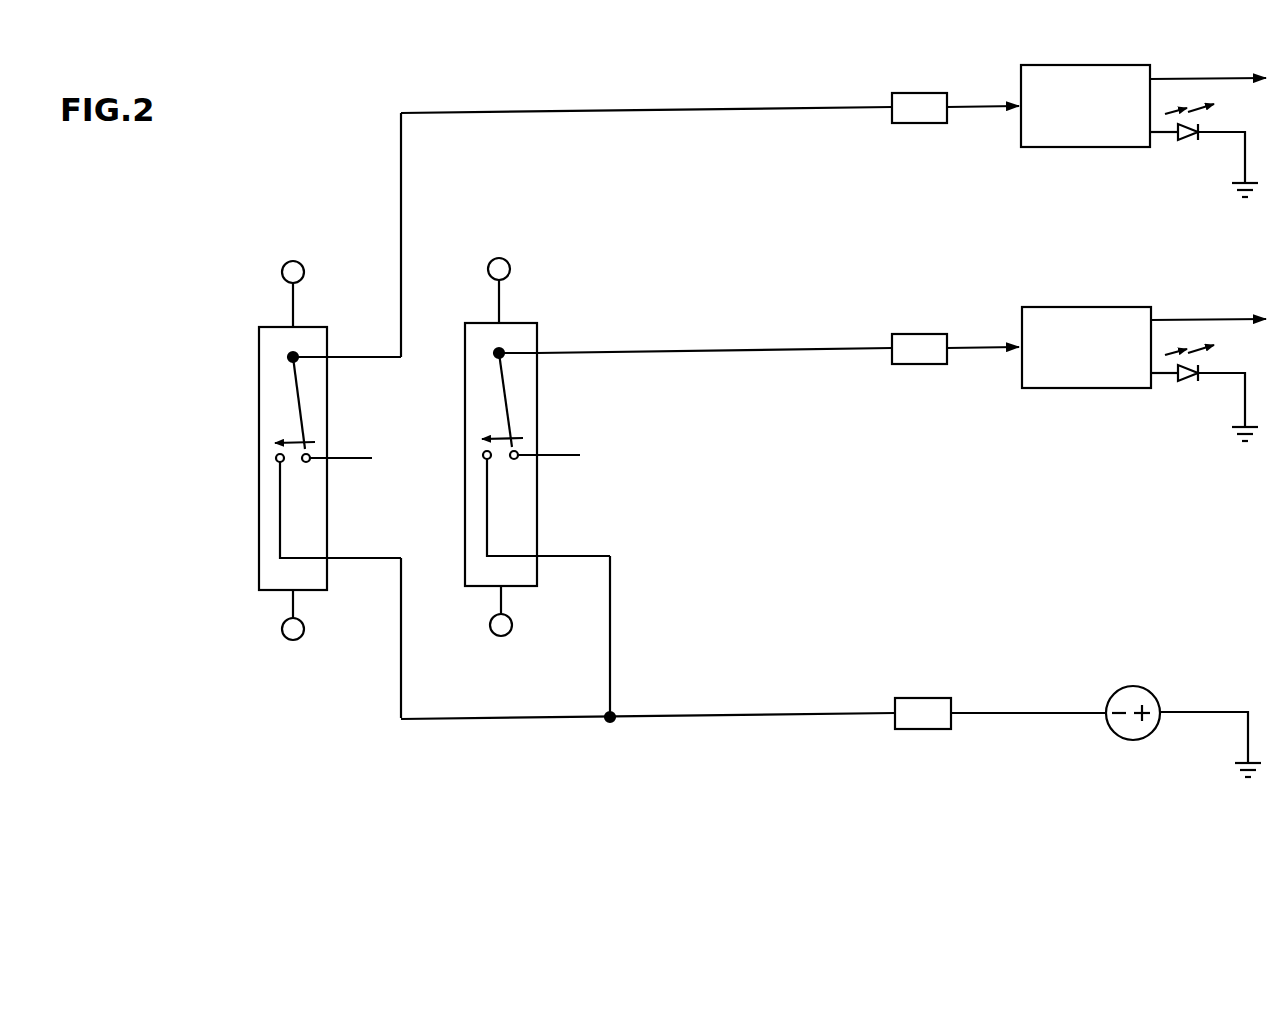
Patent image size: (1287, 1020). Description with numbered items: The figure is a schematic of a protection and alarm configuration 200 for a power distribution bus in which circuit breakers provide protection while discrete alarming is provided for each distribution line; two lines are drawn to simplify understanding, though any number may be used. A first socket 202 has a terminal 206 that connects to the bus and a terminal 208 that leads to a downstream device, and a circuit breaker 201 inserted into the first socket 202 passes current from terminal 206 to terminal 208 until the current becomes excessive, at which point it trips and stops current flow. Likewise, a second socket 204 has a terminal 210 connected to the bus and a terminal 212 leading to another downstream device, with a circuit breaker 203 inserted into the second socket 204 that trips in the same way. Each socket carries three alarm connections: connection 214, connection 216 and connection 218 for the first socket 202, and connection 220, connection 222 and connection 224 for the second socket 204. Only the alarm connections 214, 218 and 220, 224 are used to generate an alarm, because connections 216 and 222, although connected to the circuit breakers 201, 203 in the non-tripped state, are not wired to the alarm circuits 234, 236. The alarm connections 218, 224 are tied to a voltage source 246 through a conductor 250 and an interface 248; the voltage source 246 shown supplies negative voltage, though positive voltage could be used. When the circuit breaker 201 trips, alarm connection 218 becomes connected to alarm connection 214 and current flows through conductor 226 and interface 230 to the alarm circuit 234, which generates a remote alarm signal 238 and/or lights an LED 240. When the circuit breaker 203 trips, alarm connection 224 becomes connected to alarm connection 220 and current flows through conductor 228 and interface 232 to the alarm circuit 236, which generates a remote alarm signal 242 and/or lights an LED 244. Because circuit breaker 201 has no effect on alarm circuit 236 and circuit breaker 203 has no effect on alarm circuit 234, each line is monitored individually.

The protection and alarm configuration 200 is at (803, 752).
The circuit breaker 201 is at (282, 382).
The first socket 202 is at (258, 517).
The circuit breaker 203 is at (492, 372).
The second socket 204 is at (468, 514).
The terminal 206 is at (295, 261).
The terminal 208 is at (304, 634).
The terminal 210 is at (510, 265).
The terminal 212 is at (511, 630).
The alarm connection 214 is at (340, 352).
The alarm connection 216 is at (350, 456).
The alarm connection 218 is at (350, 557).
The alarm connection 220 is at (548, 350).
The alarm connection 222 is at (560, 454).
The alarm connection 224 is at (557, 555).
The conductor 226 is at (672, 110).
The conductor 228 is at (675, 351).
The interface 230 is at (920, 92).
The interface 232 is at (920, 333).
The alarm circuit 234 is at (1103, 63).
The alarm circuit 236 is at (1104, 305).
The remote alarm signal 238 is at (1193, 77).
The LED 240 is at (1190, 150).
The remote alarm signal 242 is at (1195, 318).
The LED 244 is at (1190, 392).
The voltage source 246 is at (1118, 737).
The interface 248 is at (923, 697).
The conductor 250 is at (683, 716).